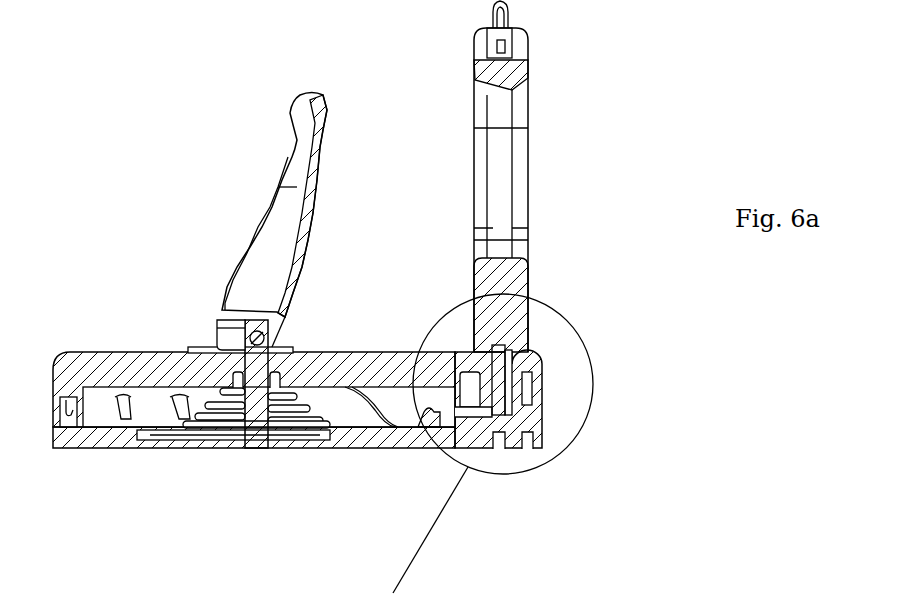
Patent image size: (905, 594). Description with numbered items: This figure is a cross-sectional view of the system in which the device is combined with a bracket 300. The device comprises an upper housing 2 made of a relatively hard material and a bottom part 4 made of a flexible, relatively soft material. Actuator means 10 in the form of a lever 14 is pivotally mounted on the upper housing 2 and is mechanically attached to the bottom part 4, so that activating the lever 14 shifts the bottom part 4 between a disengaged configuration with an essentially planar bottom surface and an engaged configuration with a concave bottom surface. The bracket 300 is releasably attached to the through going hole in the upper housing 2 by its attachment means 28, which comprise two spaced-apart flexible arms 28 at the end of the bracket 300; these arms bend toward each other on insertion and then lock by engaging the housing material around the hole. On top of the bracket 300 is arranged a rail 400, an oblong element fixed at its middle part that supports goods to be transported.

The upper housing 2 is at (357, 350).
The bottom part 4 is at (77, 443).
The actuator means 10 is at (193, 271).
The lever 14 is at (278, 220).
The attachment means 28 is at (545, 402).
The bracket 300 is at (500, 152).
The rail 400 is at (533, 50).